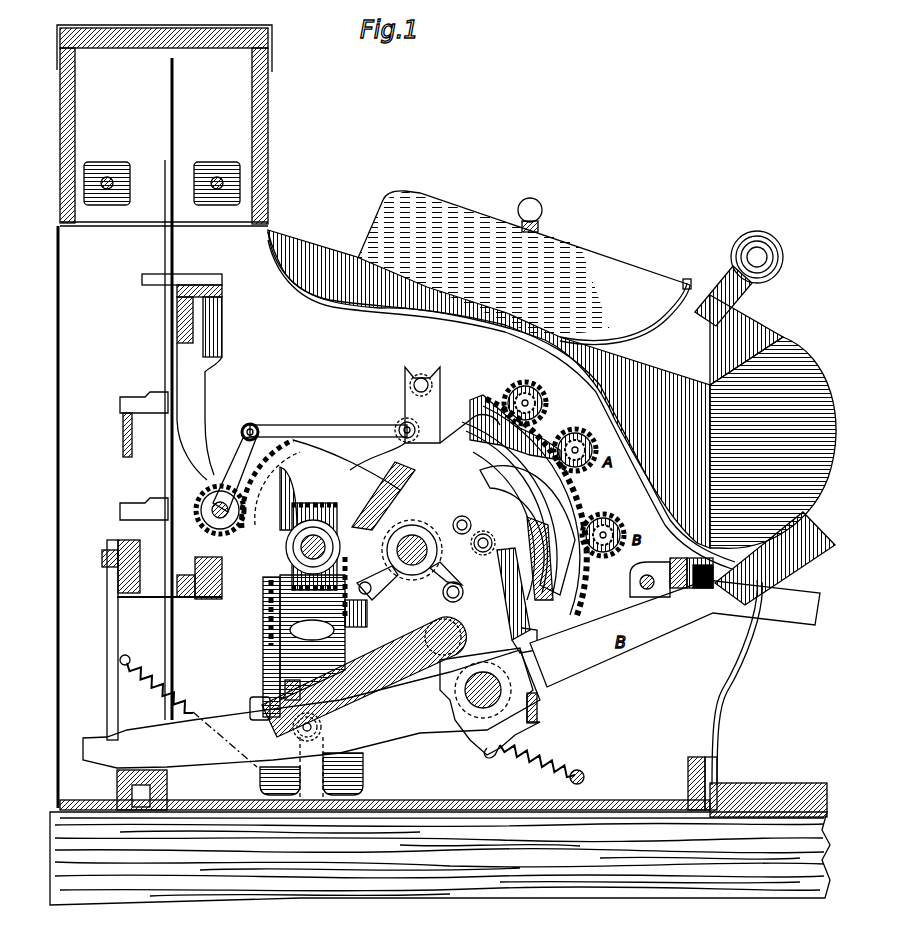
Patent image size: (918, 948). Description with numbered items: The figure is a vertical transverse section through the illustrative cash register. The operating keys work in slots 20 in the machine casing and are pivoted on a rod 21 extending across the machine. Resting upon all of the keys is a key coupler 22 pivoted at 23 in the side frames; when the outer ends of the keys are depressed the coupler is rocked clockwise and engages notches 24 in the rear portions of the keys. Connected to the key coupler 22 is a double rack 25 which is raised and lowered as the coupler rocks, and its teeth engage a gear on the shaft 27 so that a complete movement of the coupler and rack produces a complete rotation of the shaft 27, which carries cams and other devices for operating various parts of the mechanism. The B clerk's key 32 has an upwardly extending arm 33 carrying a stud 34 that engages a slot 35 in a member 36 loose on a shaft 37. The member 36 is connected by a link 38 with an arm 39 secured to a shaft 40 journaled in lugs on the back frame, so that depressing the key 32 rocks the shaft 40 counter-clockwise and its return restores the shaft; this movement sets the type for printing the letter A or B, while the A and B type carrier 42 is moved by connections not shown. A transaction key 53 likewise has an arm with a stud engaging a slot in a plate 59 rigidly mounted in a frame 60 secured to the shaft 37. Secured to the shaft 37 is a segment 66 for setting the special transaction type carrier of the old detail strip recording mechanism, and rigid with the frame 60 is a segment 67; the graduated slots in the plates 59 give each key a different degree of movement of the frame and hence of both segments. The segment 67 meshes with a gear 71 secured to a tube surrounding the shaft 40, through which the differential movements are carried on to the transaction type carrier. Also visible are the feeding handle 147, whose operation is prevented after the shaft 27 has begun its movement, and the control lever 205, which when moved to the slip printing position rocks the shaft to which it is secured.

The control lever 205 is at (543, 210).
The feeding handle 147 is at (733, 243).
The A and B type carrier 42 is at (517, 382).
The link 38 is at (360, 426).
The arm 39 is at (238, 462).
The gear 71 is at (208, 497).
The segment 67 is at (321, 578).
The member 36 is at (455, 497).
The frame 60 is at (460, 517).
The stud 34 is at (490, 538).
The slot 35 is at (492, 548).
The segment 66 is at (566, 497).
The plate 59 is at (560, 570).
The transaction key 53 is at (798, 552).
The shaft 40 is at (288, 546).
The shaft 27 is at (313, 547).
The shaft 37 is at (412, 563).
The pivot 23 is at (412, 566).
The double rack 25 is at (368, 622).
The arm 33 is at (508, 600).
The B key 32 is at (675, 633).
The slots 20 is at (730, 667).
The notches 24 is at (257, 637).
The key coupler 22 is at (405, 666).
The rod 21 is at (505, 695).